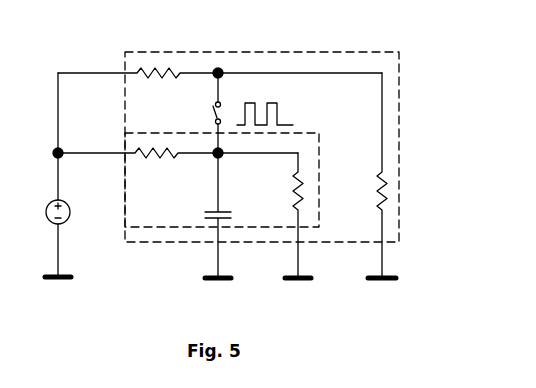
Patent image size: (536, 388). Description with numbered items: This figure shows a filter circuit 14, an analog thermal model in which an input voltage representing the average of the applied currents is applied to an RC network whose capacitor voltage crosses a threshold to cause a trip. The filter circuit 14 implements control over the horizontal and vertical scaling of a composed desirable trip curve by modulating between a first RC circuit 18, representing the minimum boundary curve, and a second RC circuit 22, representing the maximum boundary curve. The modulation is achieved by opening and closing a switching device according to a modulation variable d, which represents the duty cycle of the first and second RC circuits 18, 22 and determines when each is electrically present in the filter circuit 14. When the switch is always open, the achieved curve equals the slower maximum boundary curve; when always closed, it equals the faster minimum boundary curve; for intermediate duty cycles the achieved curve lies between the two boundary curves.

The filter circuit 14 is at (207, 190).
The first RC circuit 18 is at (228, 165).
The second RC circuit 22 is at (124, 203).